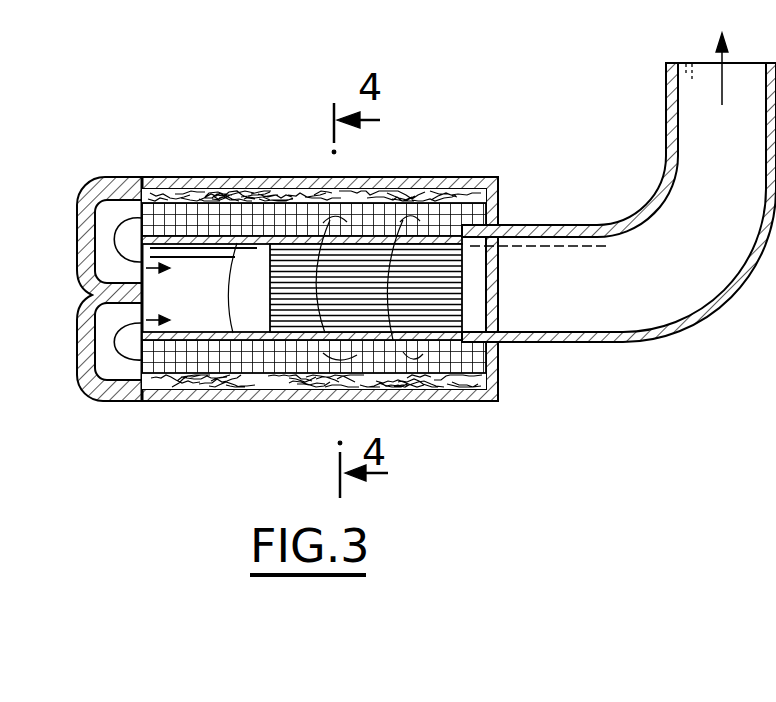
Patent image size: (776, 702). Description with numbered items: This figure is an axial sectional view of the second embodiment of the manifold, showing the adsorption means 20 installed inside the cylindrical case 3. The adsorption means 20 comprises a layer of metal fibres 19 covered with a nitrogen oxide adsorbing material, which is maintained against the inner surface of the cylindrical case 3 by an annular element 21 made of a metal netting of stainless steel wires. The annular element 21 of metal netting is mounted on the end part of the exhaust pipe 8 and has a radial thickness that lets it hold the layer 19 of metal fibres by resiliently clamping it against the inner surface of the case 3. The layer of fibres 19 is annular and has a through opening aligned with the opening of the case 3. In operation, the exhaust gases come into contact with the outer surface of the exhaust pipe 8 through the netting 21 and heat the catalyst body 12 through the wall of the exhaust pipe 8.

The cylindrical case 3 is at (265, 188).
The exhaust pipe 8 is at (568, 343).
The catalyst body 12 is at (432, 292).
The layer of metal fibres 19 is at (432, 193).
The adsorption means 20 is at (177, 172).
The annular element of metal netting 21 is at (443, 215).